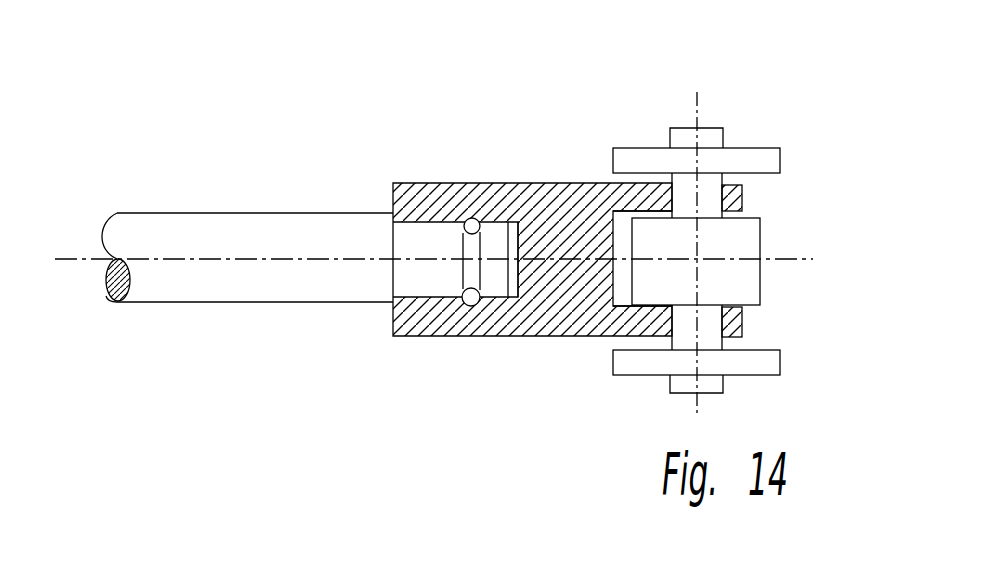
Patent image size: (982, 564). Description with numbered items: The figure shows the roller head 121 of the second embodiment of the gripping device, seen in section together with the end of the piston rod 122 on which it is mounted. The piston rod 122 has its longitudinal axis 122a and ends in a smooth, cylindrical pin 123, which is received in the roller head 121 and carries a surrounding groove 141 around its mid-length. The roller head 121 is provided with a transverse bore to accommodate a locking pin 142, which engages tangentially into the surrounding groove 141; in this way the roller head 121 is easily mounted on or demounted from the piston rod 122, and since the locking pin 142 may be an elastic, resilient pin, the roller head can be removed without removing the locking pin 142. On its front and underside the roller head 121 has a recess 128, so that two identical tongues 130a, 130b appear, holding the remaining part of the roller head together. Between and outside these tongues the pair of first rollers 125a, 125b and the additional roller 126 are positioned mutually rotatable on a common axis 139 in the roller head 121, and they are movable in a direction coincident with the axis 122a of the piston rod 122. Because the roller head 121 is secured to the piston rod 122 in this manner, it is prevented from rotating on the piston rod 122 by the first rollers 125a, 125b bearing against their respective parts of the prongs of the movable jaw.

The roller head 121 is at (428, 170).
The piston rod 122 is at (170, 228).
The axis of the piston rod 122a is at (255, 257).
The cylindrical pin 123 is at (425, 240).
The first roller 125a is at (645, 365).
The first roller 125b is at (755, 158).
The additional roller 126 is at (747, 273).
The recess 128 is at (623, 215).
The tongue 130a is at (640, 328).
The tongue 130b is at (645, 197).
The common axis 139 is at (705, 198).
The surrounding groove 141 is at (472, 272).
The locking pin 142 is at (478, 303).